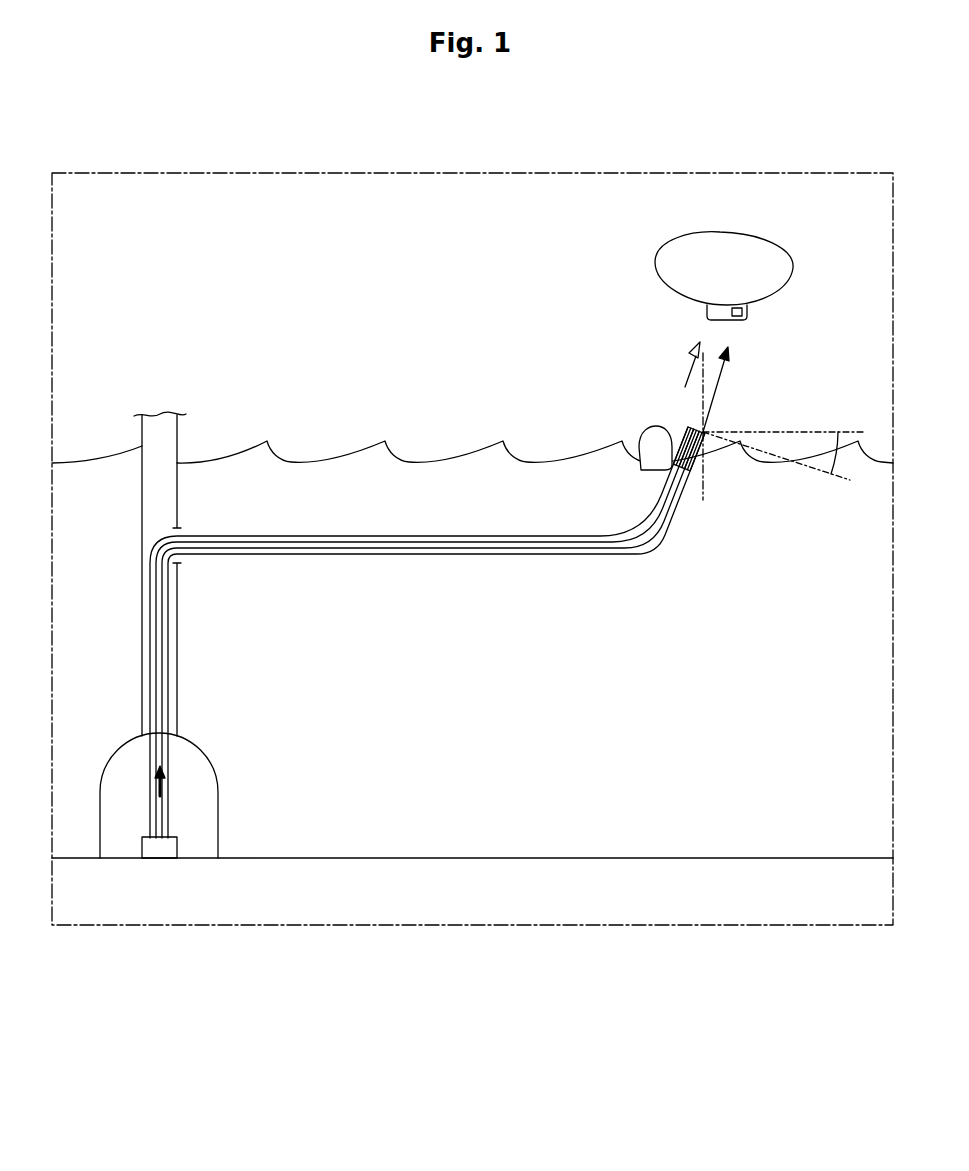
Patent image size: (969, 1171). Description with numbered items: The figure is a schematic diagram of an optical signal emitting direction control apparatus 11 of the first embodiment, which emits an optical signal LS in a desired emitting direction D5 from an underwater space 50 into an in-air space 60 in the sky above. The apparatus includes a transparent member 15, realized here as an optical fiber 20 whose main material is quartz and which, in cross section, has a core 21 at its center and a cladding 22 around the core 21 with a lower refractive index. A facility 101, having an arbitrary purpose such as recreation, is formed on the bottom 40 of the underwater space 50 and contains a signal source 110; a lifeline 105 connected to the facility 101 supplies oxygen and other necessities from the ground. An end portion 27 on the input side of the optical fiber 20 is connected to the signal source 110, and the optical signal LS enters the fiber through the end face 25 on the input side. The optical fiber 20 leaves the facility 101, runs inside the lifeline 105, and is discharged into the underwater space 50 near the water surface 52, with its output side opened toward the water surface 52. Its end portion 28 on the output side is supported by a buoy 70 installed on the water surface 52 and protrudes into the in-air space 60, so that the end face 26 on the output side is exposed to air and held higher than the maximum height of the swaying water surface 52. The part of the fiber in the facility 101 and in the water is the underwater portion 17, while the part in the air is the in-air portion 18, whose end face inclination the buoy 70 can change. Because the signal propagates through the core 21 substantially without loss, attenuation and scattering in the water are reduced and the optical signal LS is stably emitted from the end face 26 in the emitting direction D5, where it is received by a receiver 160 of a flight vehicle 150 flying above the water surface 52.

The optical signal emitting direction control apparatus 11 is at (463, 632).
The transparent member 15 is at (427, 632).
The underwater portion 17 is at (239, 556).
The in-air portion 18 is at (698, 428).
The optical fiber 20 is at (427, 632).
The core 21 is at (433, 556).
The cladding 22 is at (372, 556).
The end face on the input side 25 is at (162, 838).
The end face on the output side 26 is at (728, 425).
The end portion on the input side 27 is at (168, 824).
The end portion on the output side 28 is at (706, 437).
The bottom 40 is at (788, 858).
The underwater space 50 is at (76, 521).
The water surface 52 is at (197, 466).
The in-air space 60 is at (76, 446).
The buoy 70 is at (648, 426).
The facility 101 is at (204, 744).
The lifeline 105 is at (463, 632).
The signal source 110 is at (178, 850).
The flight vehicle 150 is at (766, 276).
The receiver 160 is at (733, 318).
The optical signal LS is at (716, 387).
The emitting direction D5 is at (684, 377).